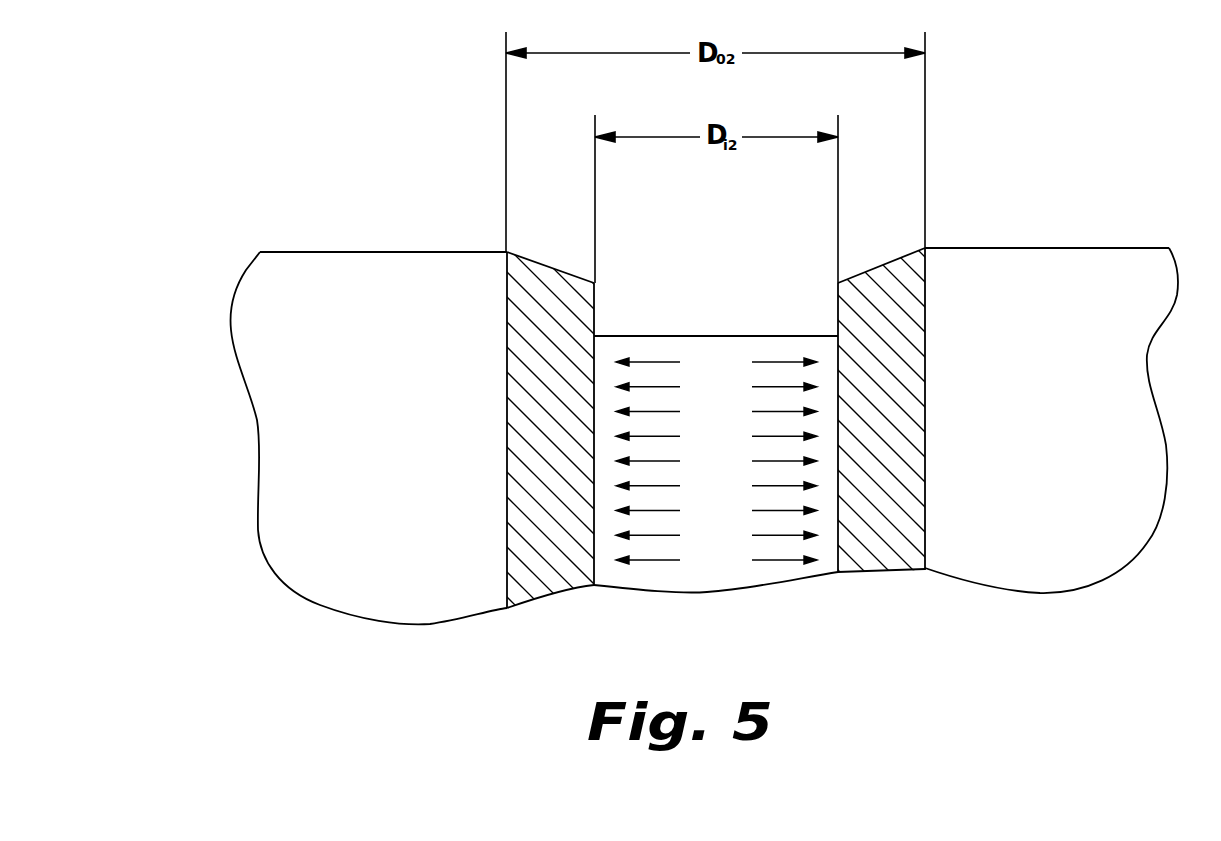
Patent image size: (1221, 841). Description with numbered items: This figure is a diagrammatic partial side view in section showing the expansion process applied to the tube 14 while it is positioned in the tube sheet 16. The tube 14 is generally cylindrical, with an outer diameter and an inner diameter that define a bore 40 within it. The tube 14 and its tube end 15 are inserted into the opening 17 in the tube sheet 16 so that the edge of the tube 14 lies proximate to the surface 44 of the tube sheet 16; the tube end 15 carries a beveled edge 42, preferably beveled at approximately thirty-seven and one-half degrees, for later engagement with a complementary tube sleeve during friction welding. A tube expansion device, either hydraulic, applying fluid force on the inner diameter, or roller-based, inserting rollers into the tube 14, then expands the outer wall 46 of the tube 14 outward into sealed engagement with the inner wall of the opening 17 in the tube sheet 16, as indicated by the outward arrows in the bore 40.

The tube 14 is at (883, 423).
The tube end 15 is at (523, 300).
The tube sheet 16 is at (323, 273).
The opening 17 is at (739, 302).
The bore 40 is at (663, 336).
The beveled edge 42 is at (538, 262).
The surface 44 is at (337, 252).
The outer wall 46 is at (925, 315).